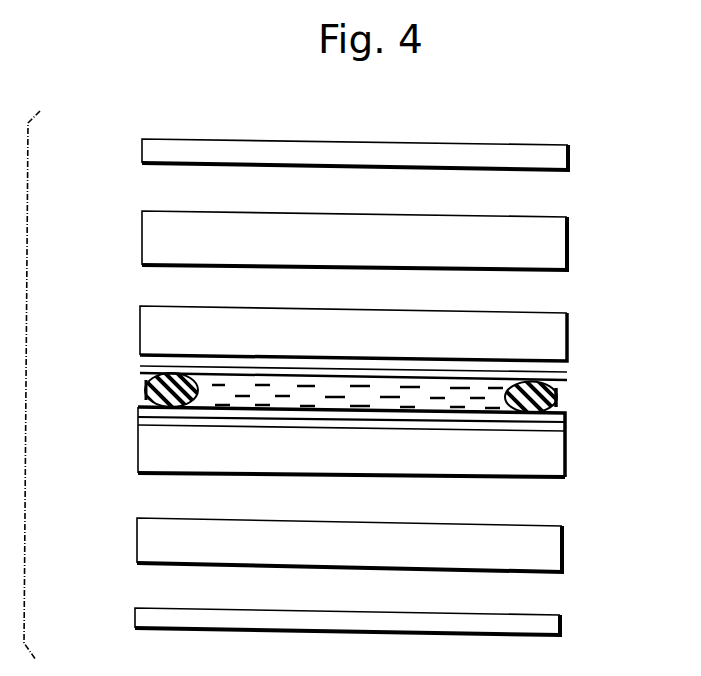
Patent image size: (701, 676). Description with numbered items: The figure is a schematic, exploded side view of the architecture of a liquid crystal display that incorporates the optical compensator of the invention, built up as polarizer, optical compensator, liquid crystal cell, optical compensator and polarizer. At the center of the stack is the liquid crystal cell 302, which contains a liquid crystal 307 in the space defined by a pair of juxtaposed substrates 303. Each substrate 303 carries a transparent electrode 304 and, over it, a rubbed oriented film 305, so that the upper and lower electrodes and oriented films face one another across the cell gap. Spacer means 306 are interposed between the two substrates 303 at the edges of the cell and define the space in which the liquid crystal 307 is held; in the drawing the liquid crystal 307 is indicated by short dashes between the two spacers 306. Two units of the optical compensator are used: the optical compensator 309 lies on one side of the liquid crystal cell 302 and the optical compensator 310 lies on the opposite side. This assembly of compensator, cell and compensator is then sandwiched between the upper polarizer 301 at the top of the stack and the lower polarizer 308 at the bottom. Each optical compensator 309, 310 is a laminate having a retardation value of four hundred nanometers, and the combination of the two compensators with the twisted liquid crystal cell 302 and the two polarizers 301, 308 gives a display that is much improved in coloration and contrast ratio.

The upper polarizer 301 is at (568, 150).
The liquid crystal cell 302 is at (558, 333).
The substrate 303 is at (148, 328).
The transparent electrode 304 is at (140, 362).
The oriented film 305 is at (138, 408).
The spacer 306 is at (560, 397).
The liquid crystal 307 is at (473, 402).
The lower polarizer 308 is at (548, 625).
The optical compensator 309 is at (553, 240).
The optical compensator 310 is at (548, 550).